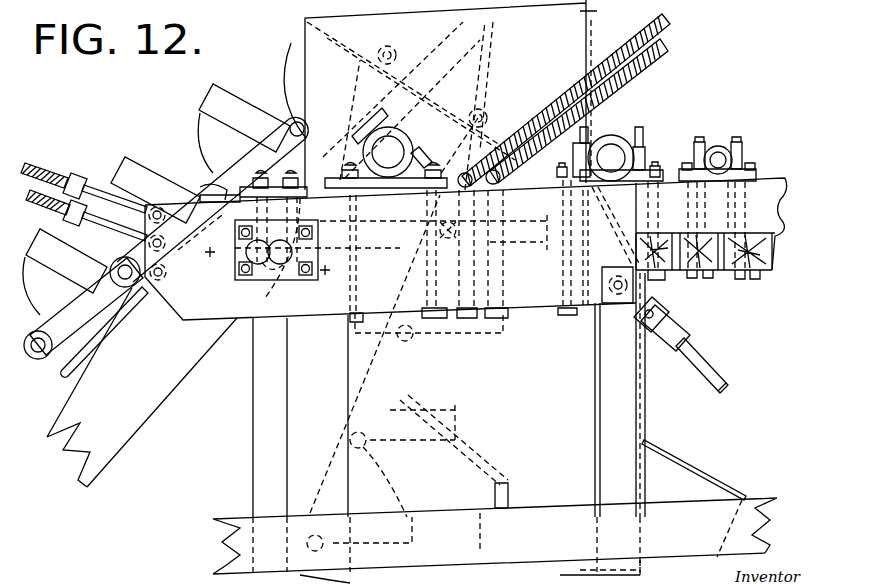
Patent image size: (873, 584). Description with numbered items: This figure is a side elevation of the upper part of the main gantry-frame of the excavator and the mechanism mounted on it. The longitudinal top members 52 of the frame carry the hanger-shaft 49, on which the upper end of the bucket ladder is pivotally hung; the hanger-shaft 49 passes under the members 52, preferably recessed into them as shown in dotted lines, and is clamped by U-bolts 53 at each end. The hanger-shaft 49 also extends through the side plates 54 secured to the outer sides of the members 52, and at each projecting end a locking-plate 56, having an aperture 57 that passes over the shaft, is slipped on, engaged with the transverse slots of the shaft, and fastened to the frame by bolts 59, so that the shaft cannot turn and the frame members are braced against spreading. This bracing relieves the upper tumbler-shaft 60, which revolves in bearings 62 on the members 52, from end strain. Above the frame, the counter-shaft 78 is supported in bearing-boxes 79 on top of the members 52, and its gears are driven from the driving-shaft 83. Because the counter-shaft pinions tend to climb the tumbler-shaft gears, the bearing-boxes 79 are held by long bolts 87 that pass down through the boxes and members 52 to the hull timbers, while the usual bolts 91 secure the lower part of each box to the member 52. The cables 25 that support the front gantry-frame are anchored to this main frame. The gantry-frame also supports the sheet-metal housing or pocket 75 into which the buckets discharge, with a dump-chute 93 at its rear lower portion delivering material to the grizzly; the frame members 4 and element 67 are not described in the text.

The frame column 4 is at (296, 430).
The cables 25 is at (36, 174).
The hanger-shaft 49 is at (290, 283).
The longitudinal top members 52 is at (220, 324).
The U-bolts 53 is at (259, 177).
The side plates 54 is at (183, 320).
The locking-plate 56 is at (318, 245).
The aperture 57 is at (240, 232).
The bolts 59 is at (246, 276).
The upper tumbler-shaft 60 is at (394, 147).
The bearings 62 is at (337, 177).
The member 67 is at (740, 0).
The housing or pocket 75 is at (487, 438).
The counter-shaft 78 is at (612, 160).
The bearing-boxes 79 is at (606, 137).
The driving-shaft 83 is at (718, 158).
The bolts 87 is at (605, 376).
The bolts 91 is at (562, 167).
The dump-chute 93 is at (697, 484).